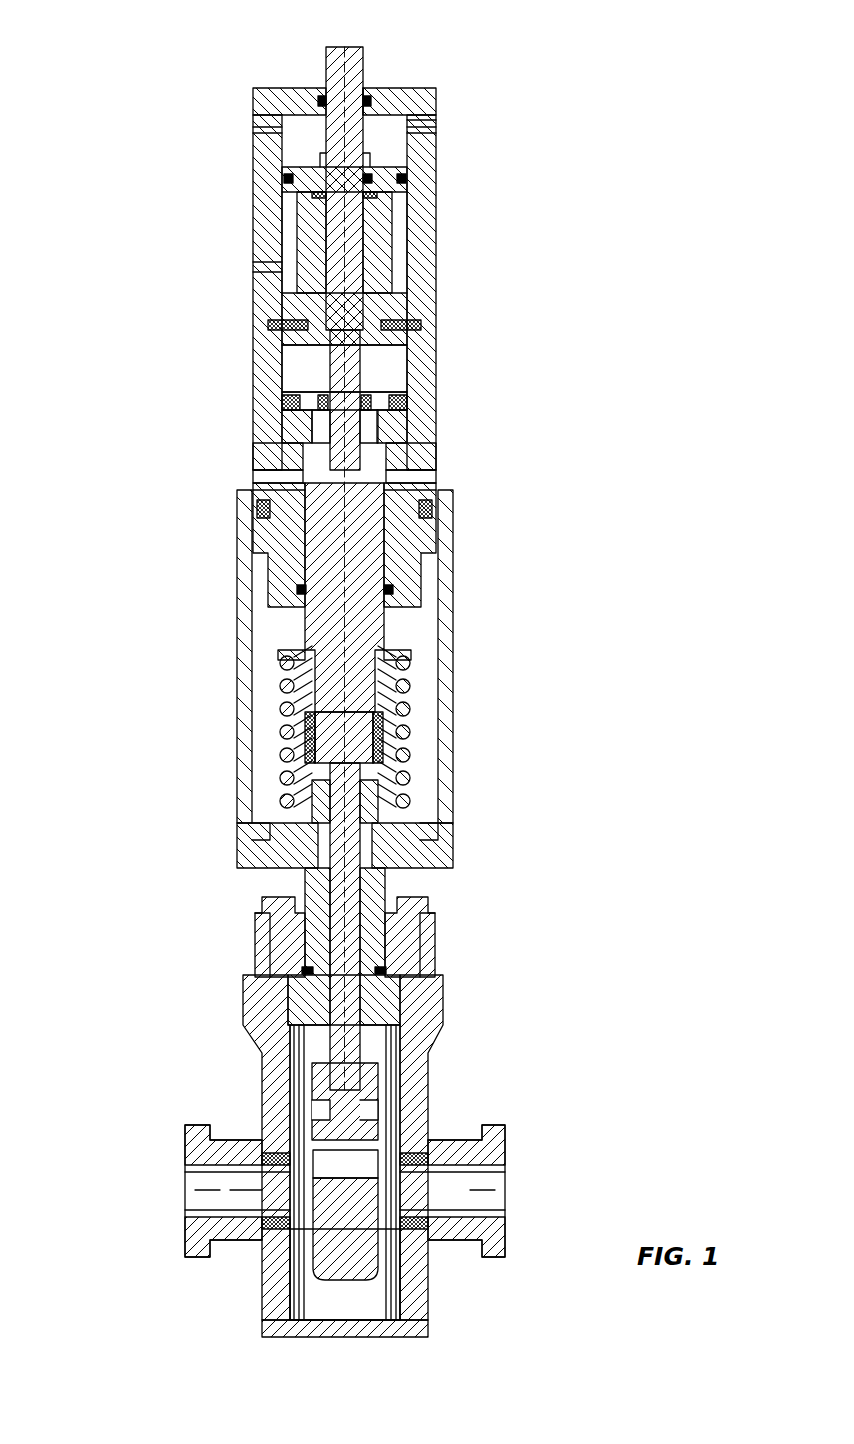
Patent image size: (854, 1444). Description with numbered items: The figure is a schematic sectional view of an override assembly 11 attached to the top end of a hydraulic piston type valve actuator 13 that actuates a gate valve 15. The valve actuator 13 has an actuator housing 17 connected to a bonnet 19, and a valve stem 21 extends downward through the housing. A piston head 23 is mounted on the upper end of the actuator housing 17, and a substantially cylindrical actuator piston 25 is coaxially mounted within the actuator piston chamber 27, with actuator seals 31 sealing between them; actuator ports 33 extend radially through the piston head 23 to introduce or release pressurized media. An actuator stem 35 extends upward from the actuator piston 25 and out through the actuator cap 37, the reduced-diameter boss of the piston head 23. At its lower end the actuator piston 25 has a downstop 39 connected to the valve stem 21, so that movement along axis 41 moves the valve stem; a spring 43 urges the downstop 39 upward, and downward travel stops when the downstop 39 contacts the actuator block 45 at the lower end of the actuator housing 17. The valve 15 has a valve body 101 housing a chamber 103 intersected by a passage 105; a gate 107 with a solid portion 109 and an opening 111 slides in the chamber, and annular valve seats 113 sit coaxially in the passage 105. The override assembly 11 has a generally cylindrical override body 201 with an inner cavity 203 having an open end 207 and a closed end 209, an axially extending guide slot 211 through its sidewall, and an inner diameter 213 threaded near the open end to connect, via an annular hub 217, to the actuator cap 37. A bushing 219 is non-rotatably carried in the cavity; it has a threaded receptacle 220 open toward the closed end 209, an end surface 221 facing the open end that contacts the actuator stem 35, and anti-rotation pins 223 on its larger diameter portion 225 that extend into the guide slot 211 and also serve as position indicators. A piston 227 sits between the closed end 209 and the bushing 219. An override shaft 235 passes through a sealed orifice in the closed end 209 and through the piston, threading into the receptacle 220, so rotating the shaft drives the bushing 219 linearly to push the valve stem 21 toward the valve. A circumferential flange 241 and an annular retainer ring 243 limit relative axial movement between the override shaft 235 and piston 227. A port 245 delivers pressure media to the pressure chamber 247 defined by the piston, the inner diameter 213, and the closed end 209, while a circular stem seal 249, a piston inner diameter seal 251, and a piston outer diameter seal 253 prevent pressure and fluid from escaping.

The override assembly 11 is at (130, 140).
The valve actuator 13 is at (170, 568).
The valve 15 is at (183, 1022).
The actuator housing 17 is at (453, 690).
The bonnet 19 is at (453, 938).
The valve stem 21 is at (335, 775).
The piston head 23 is at (413, 593).
The actuator piston 25 is at (322, 552).
The actuator piston chamber 27 is at (380, 545).
The actuator seals 31 is at (300, 590).
The actuator ports 33 is at (268, 475).
The actuator stem 35 is at (360, 393).
The actuator cap 37 is at (317, 425).
The downstop 39 is at (300, 653).
The axis 41 is at (327, 67).
The spring 43 is at (280, 733).
The actuator block 45 is at (373, 800).
The valve body 101 is at (270, 1060).
The chamber 103 is at (380, 1052).
The passage 105 is at (213, 1212).
The gate 107 is at (397, 1280).
The solid portion 109 is at (313, 1253).
The opening 111 is at (400, 1130).
The annular valve seats 113 is at (272, 1150).
The override body 201 is at (437, 233).
The inner cavity 203 is at (398, 247).
The open end 207 is at (253, 460).
The closed end 209 is at (307, 92).
The guide slot 211 is at (253, 272).
The inner diameter 213 is at (290, 240).
The annular hub 217 is at (437, 433).
The bushing 219 is at (253, 267).
The receptacle 220 is at (355, 283).
The end surface 221 is at (397, 350).
The anti-rotation pin 223 is at (383, 160).
The larger diameter portion 225 is at (420, 325).
The piston 227 is at (437, 173).
The override shaft 235 is at (320, 103).
The circumferential flange 241 is at (320, 157).
The annular retainer ring 243 is at (320, 195).
The port 245 is at (437, 128).
The pressure chamber 247 is at (437, 90).
The circular stem seal 249 is at (370, 100).
The circular piston inner diameter seal 251 is at (287, 178).
The circular piston outer diameter seal 253 is at (410, 180).